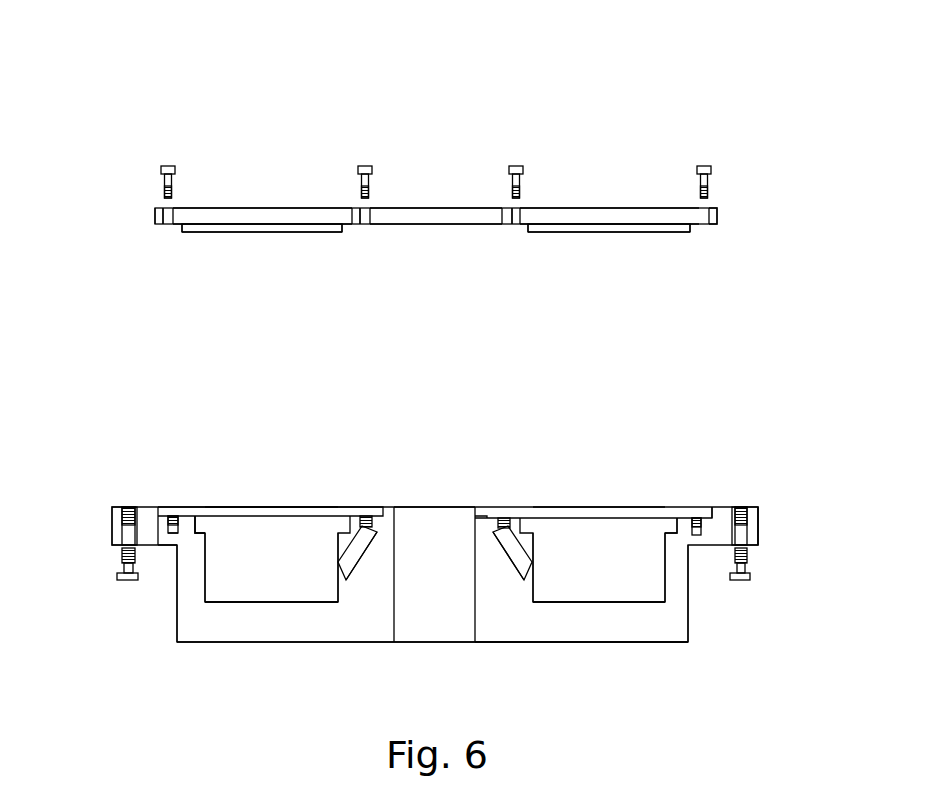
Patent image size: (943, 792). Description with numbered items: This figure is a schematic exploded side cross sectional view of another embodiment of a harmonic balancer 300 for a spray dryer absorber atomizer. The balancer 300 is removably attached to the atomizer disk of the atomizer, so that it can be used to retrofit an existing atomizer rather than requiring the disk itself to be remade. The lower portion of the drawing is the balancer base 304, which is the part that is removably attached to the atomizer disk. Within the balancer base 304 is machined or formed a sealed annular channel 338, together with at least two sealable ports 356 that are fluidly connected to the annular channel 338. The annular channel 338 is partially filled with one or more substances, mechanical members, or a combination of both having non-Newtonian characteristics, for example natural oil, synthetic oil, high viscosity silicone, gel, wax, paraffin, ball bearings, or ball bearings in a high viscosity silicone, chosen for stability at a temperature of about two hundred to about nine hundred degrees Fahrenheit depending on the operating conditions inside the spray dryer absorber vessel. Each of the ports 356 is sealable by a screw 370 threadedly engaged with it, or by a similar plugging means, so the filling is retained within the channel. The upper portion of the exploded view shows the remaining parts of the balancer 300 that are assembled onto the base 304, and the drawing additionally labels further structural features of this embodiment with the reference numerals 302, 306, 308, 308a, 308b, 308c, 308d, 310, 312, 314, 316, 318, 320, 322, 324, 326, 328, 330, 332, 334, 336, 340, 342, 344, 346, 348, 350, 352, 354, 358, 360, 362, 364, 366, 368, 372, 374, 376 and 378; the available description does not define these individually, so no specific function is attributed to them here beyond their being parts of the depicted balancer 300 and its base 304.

The balancer 300 is at (440, 171).
The second carrier plate 302 is at (697, 210).
The balancer base 304 is at (690, 612).
The first carrier plate 306 is at (233, 208).
The end fastener block 308 is at (168, 227).
The lower surface of spacer 308a is at (300, 230).
The outer end of spacer 308b is at (178, 230).
The inner end of spacer 308c is at (343, 230).
The spacer strip 308d is at (238, 233).
The top plate assembly 310 is at (445, 215).
The center bridge section 312 is at (392, 207).
The end cap 314 is at (718, 218).
The bottom surface 316 is at (690, 637).
The top plate 318 is at (145, 505).
The bottom wall 320 is at (595, 642).
The central pillar 322 is at (435, 507).
The notch 324 is at (478, 525).
The outer side wall 326 is at (178, 637).
The flange block 328 is at (112, 520).
The step 330 is at (172, 550).
The outer face 332 is at (758, 527).
The clamp bolt 334 is at (128, 505).
The threaded portion 336 is at (117, 505).
The annular channel 338 is at (252, 592).
The pocket side wall 340 is at (207, 563).
The pocket bottom 342 is at (280, 605).
The plate top surface 344 is at (285, 507).
The wedge screw 346 is at (366, 515).
The locating screw 348 is at (172, 517).
The pocket lip 350 is at (217, 527).
The recess 352 is at (533, 552).
The pocket 354 is at (203, 532).
The sealable ports 356 is at (350, 568).
The wedge clamp 358 is at (366, 535).
The bolt head 360 is at (175, 167).
The bolt shank 362 is at (172, 190).
The bore 364 is at (167, 230).
The hole 366 is at (170, 528).
The shoulder 368 is at (193, 530).
The screws 370 is at (363, 166).
The spacer block 372 is at (355, 205).
The spacer block 374 is at (357, 213).
The lower bolt head 376 is at (118, 578).
The lower bolt thread 378 is at (120, 555).